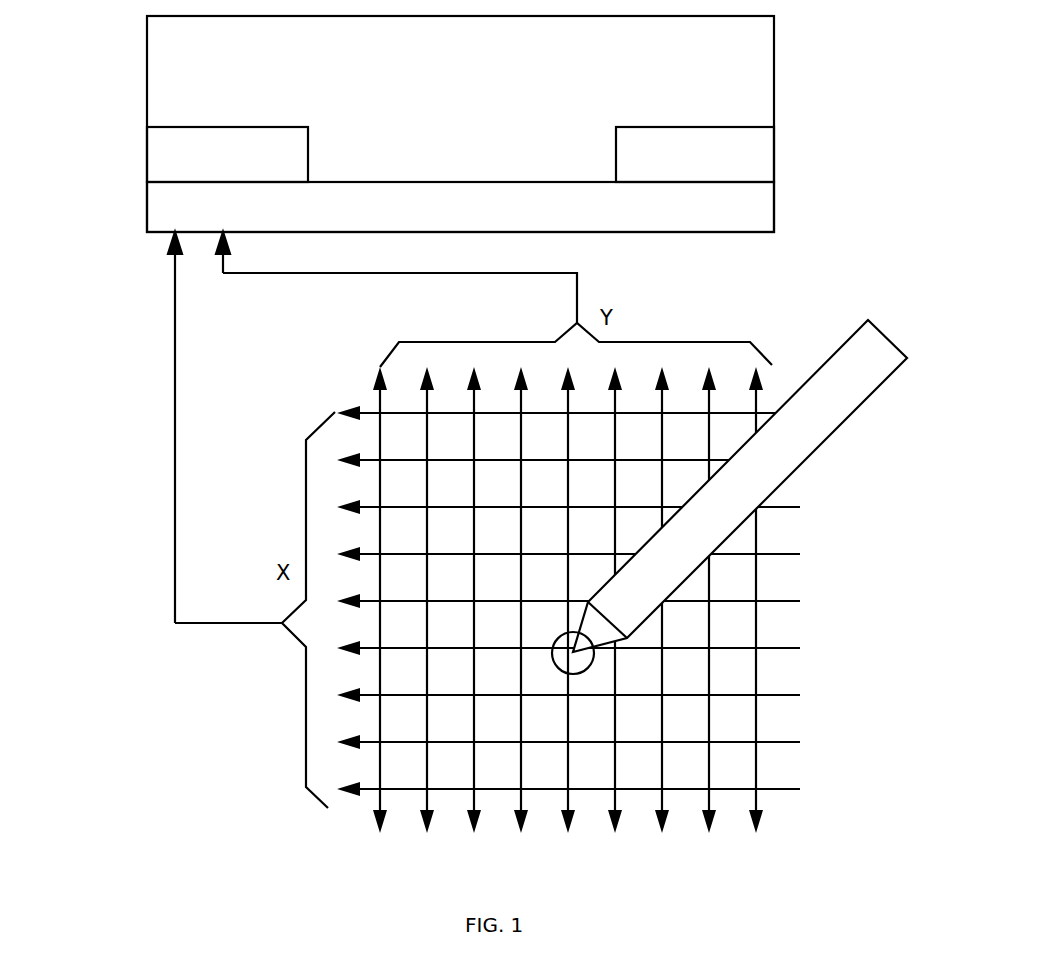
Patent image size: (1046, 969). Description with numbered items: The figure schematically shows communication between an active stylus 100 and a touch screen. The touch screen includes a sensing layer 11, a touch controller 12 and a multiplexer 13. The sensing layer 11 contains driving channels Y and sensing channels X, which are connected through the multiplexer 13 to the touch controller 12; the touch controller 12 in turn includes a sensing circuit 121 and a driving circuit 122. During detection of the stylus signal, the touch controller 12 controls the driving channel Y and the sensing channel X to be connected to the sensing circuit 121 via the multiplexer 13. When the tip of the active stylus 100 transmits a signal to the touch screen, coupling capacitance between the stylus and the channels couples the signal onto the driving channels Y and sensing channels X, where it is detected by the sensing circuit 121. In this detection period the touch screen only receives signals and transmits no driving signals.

The touch controller 12 is at (774, 57).
The sensing circuit 121 is at (153, 137).
The driving circuit 122 is at (768, 165).
The multiplexer 13 is at (755, 222).
The sensing layer 11 is at (758, 815).
The active stylus 100 is at (877, 393).